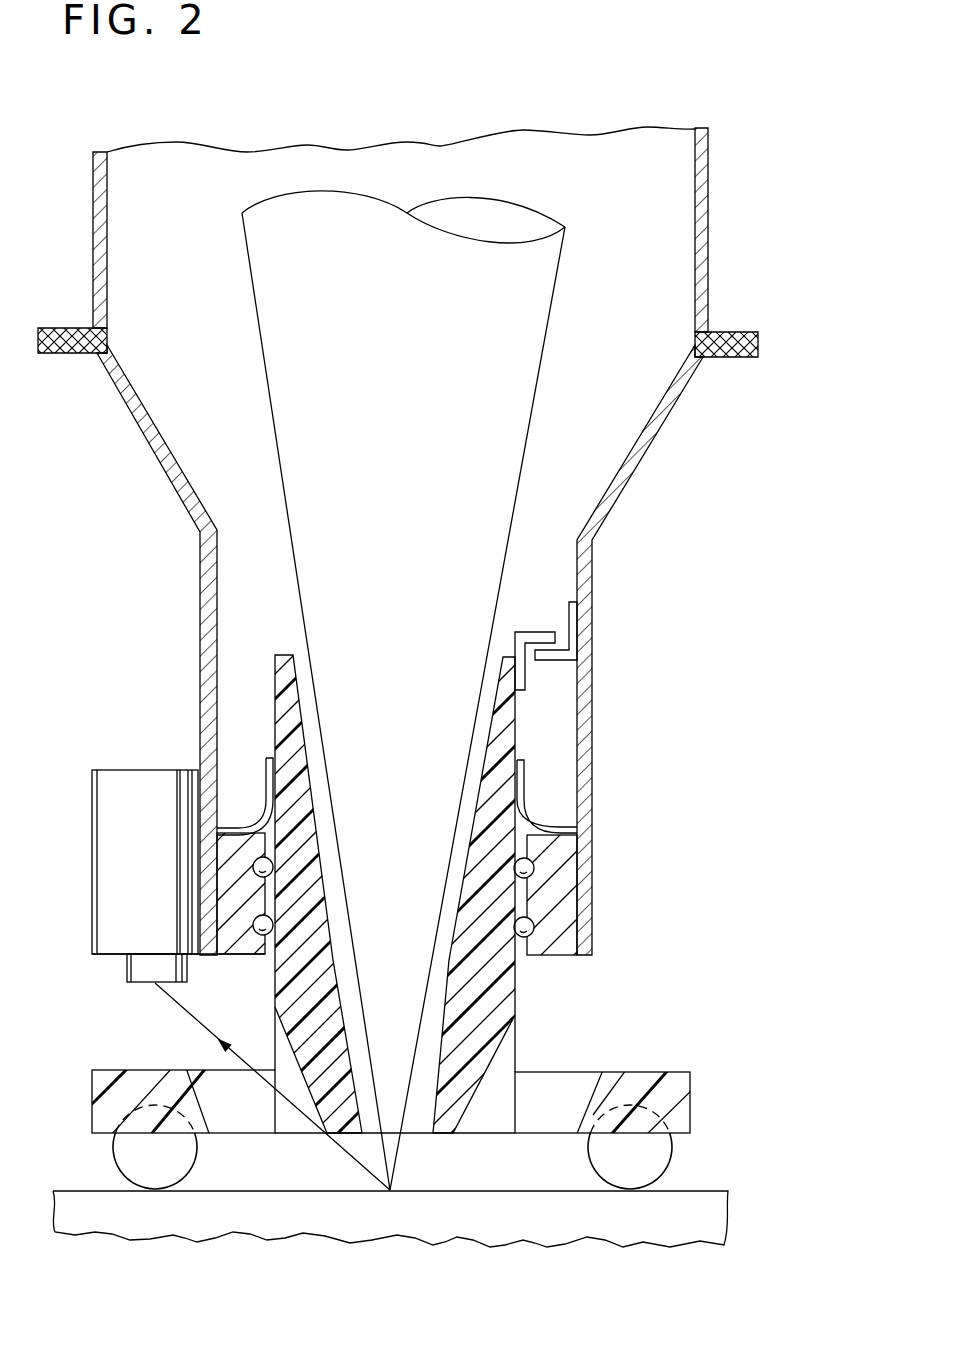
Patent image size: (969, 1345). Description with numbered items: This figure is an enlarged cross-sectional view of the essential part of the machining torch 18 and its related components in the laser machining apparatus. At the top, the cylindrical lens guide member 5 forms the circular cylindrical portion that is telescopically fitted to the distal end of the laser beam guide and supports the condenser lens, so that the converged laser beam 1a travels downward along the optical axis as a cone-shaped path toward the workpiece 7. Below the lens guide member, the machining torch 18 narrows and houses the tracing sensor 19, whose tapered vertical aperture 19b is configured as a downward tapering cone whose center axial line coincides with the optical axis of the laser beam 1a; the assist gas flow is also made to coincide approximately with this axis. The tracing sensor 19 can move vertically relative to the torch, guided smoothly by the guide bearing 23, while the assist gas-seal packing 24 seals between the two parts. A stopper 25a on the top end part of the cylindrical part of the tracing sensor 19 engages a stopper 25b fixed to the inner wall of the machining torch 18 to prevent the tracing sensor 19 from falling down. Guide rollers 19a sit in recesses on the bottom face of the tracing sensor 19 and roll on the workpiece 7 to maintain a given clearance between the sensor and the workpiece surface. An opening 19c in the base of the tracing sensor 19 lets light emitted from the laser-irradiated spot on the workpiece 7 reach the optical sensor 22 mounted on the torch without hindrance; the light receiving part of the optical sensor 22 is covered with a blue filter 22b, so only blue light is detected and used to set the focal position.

The cylindrical lens guide member 5 is at (710, 173).
The laser beam 1a is at (555, 303).
The machining torch 18 is at (660, 430).
The stopper 25a is at (530, 633).
The stopper 25b is at (553, 662).
The assist gas-seal packing 24 is at (540, 815).
The guide bearing 23 is at (548, 885).
The optical sensor 22 is at (139, 777).
The blue filter 22b is at (173, 1003).
The tracing sensor 19 is at (635, 1072).
The guide rollers 19a is at (110, 1158).
The tapered vertical aperture 19b is at (435, 1055).
The light guide opening 19c is at (213, 1083).
The workpiece 7 is at (451, 1236).